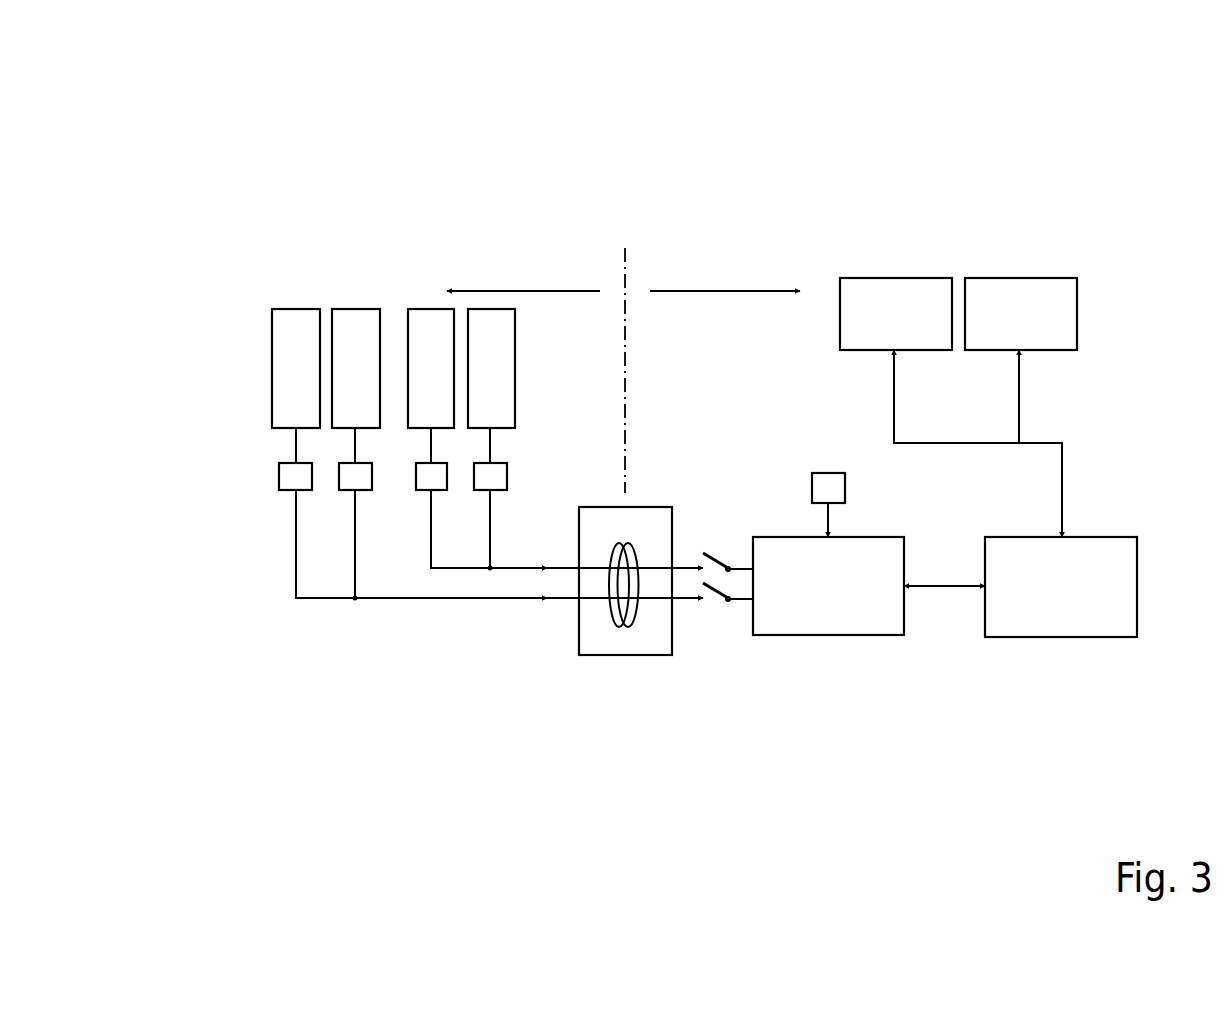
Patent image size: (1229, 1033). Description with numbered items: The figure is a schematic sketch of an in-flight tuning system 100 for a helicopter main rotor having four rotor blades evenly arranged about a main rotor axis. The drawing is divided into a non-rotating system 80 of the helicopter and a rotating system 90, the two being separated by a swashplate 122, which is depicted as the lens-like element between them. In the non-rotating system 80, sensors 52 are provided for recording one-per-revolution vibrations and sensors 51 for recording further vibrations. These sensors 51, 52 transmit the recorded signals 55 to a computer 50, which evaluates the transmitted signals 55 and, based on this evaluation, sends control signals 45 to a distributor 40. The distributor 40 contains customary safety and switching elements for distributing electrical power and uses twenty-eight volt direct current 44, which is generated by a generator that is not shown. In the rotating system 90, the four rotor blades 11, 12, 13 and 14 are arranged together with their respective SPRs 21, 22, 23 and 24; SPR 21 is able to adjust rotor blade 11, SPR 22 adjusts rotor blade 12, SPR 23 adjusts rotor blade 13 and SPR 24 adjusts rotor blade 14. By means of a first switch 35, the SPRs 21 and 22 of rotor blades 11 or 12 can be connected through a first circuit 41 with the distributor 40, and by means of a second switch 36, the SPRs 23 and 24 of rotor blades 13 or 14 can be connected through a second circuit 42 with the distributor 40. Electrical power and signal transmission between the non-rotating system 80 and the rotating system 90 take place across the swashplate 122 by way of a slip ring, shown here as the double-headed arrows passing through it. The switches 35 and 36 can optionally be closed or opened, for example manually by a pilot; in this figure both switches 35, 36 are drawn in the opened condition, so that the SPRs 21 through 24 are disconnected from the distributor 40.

The LIDAR sensor system 100 is at (253, 279).
The rotor blade 11 is at (303, 318).
The rotor blade 12 is at (361, 318).
The rotor blade 13 is at (437, 318).
The rotor blade 14 is at (497, 318).
The SPR 21 is at (279, 479).
The SPR 22 is at (349, 482).
The SPR 23 is at (425, 478).
The SPR 24 is at (485, 478).
The swashplate 122 is at (618, 630).
The rotating system 90 is at (561, 291).
The non-rotating system 80 is at (665, 291).
The second switch 36 is at (712, 550).
The second circuit 42 is at (735, 568).
The first switch 35 is at (703, 603).
The first circuit 41 is at (735, 605).
The distributor 40 is at (834, 612).
The 28 Volt DC 44 is at (828, 473).
The control signals 45 is at (945, 590).
The computer 50 is at (1043, 612).
The sensors 51 is at (1045, 290).
The sensors 52 is at (908, 290).
The signals 55 is at (1062, 485).